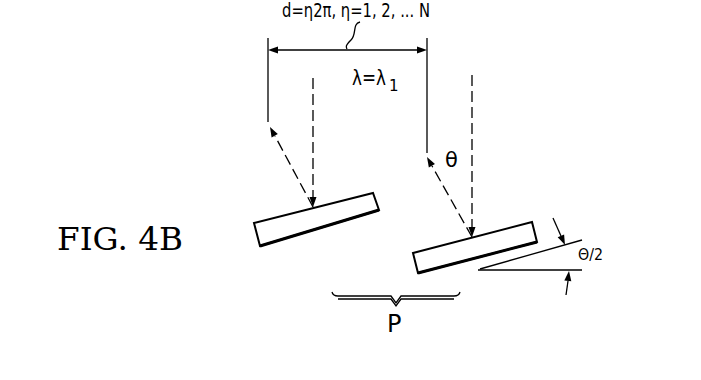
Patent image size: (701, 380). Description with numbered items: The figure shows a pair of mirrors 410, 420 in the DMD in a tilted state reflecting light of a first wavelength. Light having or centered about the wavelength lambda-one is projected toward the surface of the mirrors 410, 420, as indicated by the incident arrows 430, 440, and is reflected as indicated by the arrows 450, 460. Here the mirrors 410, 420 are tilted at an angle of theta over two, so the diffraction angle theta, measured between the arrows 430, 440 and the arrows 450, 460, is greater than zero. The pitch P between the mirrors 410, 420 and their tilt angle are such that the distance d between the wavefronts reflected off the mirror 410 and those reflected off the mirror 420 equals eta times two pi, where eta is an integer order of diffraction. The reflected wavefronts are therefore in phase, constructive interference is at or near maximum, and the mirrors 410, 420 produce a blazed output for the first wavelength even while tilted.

The mirror 410 is at (289, 240).
The mirror 420 is at (507, 228).
The arrow 430 is at (314, 131).
The arrow 440 is at (473, 128).
The arrow 450 is at (287, 167).
The arrow 460 is at (448, 190).